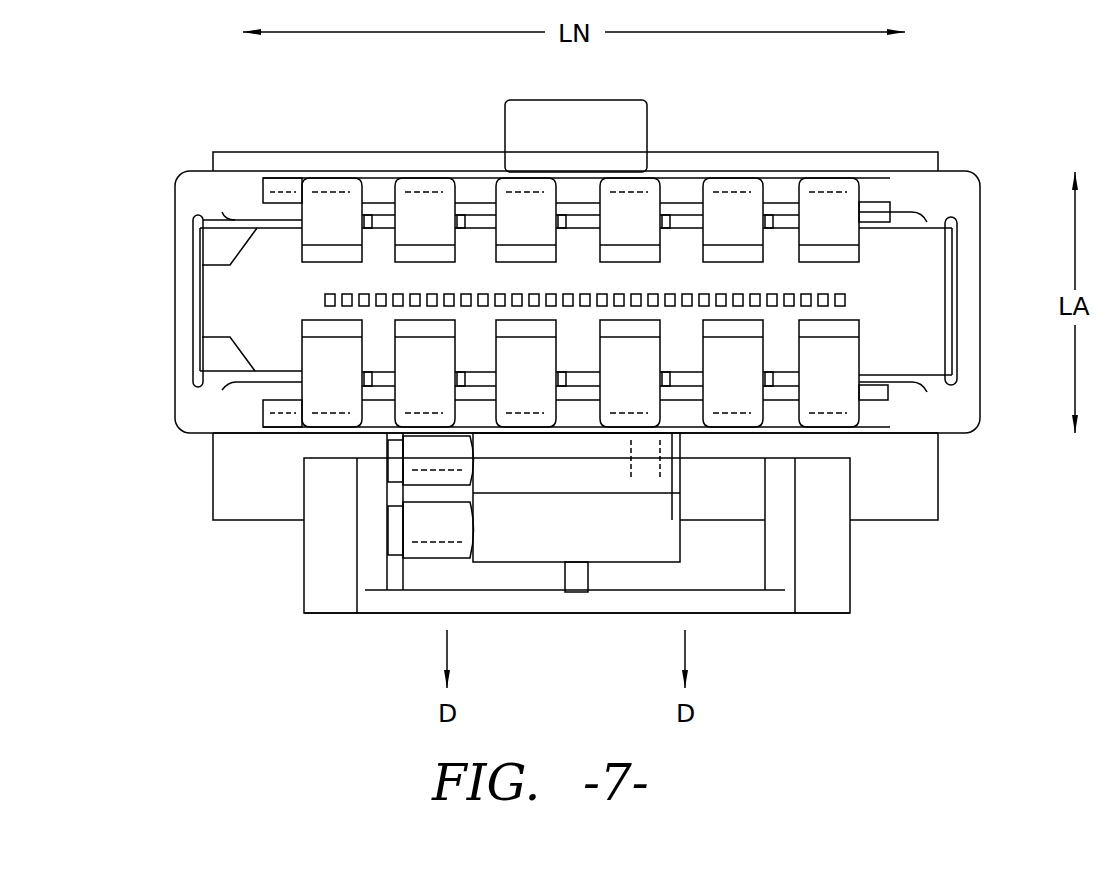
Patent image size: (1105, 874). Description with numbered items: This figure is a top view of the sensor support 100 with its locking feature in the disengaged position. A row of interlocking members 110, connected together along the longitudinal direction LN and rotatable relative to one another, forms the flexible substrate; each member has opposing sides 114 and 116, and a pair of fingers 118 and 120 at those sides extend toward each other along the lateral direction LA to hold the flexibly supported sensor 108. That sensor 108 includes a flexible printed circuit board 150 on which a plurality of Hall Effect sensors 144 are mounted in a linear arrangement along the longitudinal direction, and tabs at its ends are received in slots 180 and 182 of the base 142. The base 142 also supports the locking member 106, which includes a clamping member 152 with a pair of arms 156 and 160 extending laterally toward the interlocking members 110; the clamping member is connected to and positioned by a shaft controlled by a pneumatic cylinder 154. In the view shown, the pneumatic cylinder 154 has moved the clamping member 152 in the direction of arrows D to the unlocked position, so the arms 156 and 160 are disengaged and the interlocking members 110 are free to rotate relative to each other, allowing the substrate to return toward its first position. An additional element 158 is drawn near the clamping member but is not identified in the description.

The sensor support 100 is at (997, 95).
The locking member 106 is at (823, 630).
The flexibly supported sensor 108 is at (928, 257).
The interlocking members 110 is at (340, 205).
The side 114 is at (811, 163).
The side 116 is at (300, 442).
The finger 118 is at (728, 382).
The finger 120 is at (325, 218).
The base 142 is at (237, 460).
The Hall Effect sensors 144 is at (468, 294).
The flexible printed circuit board 150 is at (217, 298).
The clamping member 152 is at (334, 592).
The pneumatic cylinder 154 is at (515, 537).
The arm 156 is at (572, 580).
The left wall 158 is at (320, 498).
The arm 160 is at (827, 508).
The slot 180 is at (192, 391).
The slot 182 is at (951, 389).